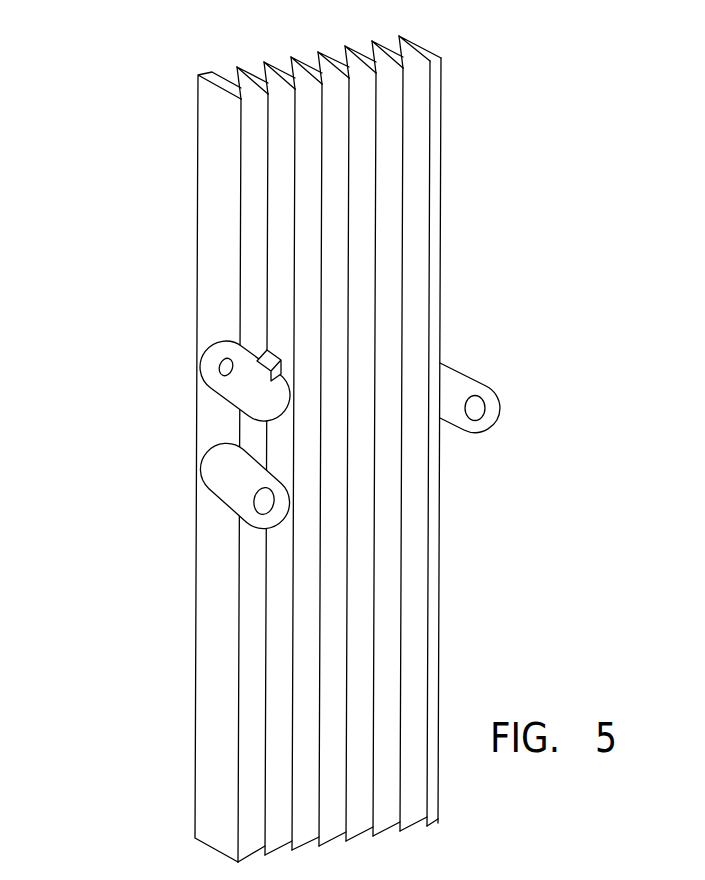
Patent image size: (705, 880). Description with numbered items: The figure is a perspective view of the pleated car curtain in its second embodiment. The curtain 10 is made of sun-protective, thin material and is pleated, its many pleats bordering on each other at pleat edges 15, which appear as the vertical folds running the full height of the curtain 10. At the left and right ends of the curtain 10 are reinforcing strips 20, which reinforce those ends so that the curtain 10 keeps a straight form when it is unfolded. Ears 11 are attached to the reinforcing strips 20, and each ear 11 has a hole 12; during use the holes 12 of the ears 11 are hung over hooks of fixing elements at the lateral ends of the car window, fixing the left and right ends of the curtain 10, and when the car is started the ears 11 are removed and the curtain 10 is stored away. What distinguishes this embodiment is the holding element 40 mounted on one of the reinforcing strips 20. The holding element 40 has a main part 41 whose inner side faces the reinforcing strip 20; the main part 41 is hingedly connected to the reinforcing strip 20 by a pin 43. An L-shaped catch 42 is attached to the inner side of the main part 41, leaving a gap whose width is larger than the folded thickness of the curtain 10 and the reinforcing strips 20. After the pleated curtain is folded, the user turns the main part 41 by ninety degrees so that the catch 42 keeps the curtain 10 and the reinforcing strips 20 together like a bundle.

The curtain 10 is at (313, 449).
The ear 11 is at (218, 472).
The hole 12 is at (262, 508).
The pleat edge 15 is at (375, 262).
The reinforcing strip 20 is at (218, 173).
The holding element 40 is at (155, 335).
The main part 41 is at (262, 395).
The L-shaped catch 42 is at (267, 350).
The pin 43 is at (218, 370).